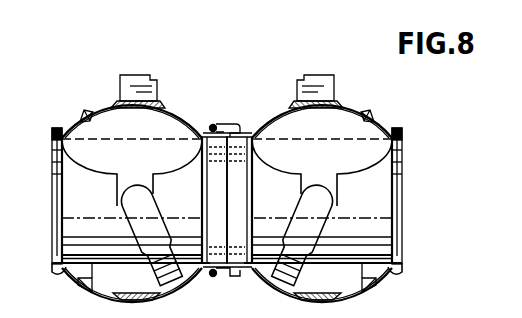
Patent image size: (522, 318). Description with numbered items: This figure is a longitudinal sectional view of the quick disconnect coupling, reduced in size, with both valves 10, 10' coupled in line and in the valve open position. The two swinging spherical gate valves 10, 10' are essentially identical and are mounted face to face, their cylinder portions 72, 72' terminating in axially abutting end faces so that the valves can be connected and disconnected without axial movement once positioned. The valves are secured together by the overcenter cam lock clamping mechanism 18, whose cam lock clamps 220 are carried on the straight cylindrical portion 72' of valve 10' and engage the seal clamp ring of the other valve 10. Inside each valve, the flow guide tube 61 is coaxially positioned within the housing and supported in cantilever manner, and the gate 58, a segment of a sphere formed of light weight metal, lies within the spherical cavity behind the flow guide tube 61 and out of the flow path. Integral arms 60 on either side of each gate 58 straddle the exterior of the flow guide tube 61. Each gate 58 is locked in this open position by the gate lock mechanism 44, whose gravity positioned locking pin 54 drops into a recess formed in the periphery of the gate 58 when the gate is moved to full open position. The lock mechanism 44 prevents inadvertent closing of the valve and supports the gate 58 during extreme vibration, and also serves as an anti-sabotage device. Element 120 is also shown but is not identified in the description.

The swinging spherical gate valve 10 is at (117, 197).
The swinging spherical gate valve 10' is at (342, 199).
The overcenter cam lock clamping mechanism 18 is at (218, 122).
The locking pin mechanism 44 is at (141, 76).
The locking pin 54 is at (137, 108).
The valve gate 58 is at (160, 122).
The arms 60 is at (116, 178).
The flow guide tube 61 is at (123, 264).
The cylinder portion 72 is at (214, 200).
The cylinder portion 72' is at (239, 200).
The discharge tube 120 is at (165, 273).
The cam lock clamps 220 is at (219, 278).